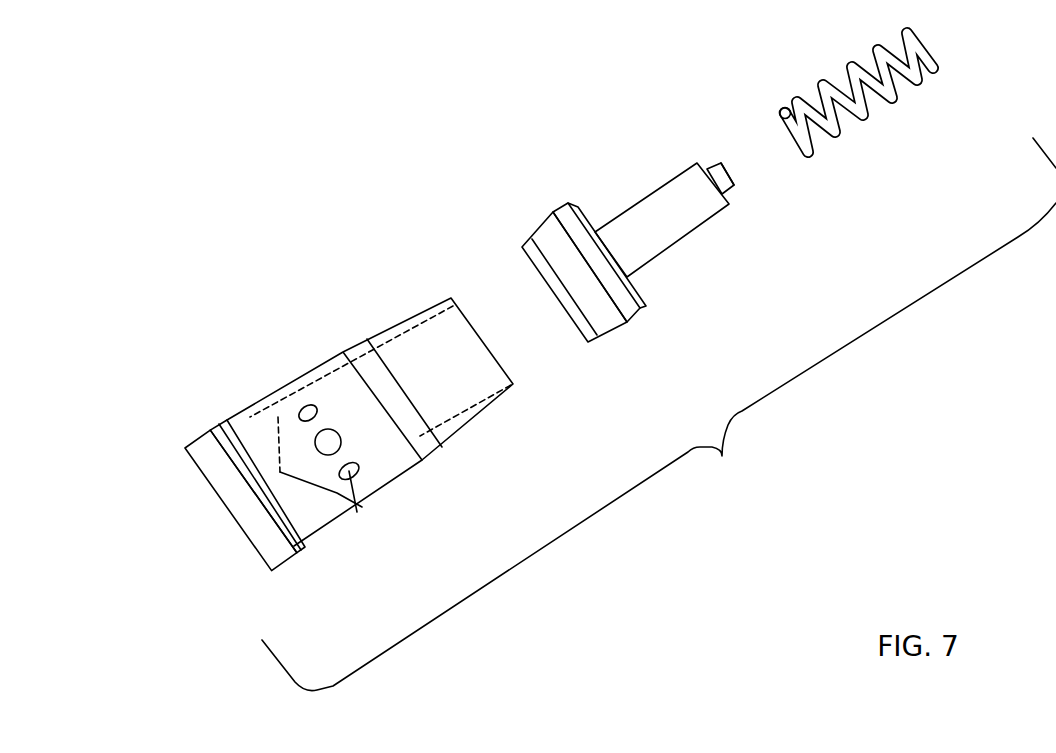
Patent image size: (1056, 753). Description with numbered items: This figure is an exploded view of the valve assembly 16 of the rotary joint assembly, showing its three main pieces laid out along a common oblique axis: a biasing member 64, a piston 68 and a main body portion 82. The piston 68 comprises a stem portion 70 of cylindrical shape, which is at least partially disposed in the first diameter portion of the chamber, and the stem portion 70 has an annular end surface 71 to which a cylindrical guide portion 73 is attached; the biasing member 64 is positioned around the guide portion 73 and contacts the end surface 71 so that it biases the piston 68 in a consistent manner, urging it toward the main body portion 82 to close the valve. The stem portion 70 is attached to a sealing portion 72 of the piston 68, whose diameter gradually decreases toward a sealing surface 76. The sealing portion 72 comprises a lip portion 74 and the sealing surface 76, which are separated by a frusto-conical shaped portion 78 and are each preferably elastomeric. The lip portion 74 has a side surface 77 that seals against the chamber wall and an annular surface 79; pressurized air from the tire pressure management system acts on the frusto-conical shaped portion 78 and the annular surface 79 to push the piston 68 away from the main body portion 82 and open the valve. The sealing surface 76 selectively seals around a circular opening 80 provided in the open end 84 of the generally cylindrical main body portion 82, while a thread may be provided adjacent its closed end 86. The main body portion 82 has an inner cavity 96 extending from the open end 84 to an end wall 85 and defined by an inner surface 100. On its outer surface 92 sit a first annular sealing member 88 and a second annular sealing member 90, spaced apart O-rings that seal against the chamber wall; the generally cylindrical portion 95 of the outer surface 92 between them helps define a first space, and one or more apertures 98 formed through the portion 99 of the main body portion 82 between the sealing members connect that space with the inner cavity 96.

The valve assembly 16 is at (724, 455).
The biasing member 64 is at (833, 136).
The piston 68 is at (620, 245).
The stem portion 70 is at (638, 192).
The end surface 71 is at (710, 167).
The guide portion 73 is at (732, 176).
The lip portion 74 is at (541, 195).
The sealing surface 76 is at (521, 248).
The side surface 77 is at (628, 320).
The frusto-conical shaped portion 78 is at (543, 222).
The annular surface 79 is at (612, 338).
The sealing portion 72 is at (613, 358).
The opening 80 is at (506, 371).
The main body portion 82 is at (351, 442).
The open end 84 is at (451, 297).
The end wall 85 is at (280, 472).
The closed end 86 is at (185, 448).
The first annular sealing member 88 is at (308, 547).
The second annular sealing member 90 is at (438, 460).
The outer surface 92 is at (316, 521).
The portion of the outer surface 95 is at (332, 360).
The inner cavity 96 is at (324, 393).
The apertures 98 is at (328, 442).
The portion of the main body portion 99 is at (362, 474).
The inner surface 100 is at (363, 477).